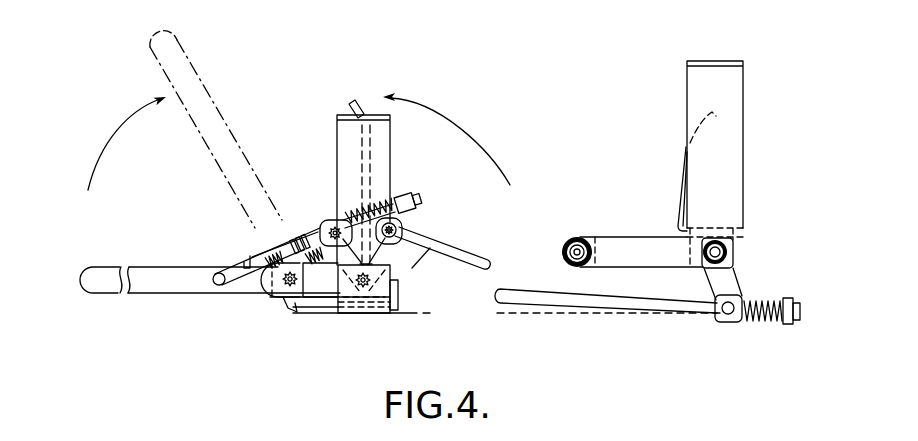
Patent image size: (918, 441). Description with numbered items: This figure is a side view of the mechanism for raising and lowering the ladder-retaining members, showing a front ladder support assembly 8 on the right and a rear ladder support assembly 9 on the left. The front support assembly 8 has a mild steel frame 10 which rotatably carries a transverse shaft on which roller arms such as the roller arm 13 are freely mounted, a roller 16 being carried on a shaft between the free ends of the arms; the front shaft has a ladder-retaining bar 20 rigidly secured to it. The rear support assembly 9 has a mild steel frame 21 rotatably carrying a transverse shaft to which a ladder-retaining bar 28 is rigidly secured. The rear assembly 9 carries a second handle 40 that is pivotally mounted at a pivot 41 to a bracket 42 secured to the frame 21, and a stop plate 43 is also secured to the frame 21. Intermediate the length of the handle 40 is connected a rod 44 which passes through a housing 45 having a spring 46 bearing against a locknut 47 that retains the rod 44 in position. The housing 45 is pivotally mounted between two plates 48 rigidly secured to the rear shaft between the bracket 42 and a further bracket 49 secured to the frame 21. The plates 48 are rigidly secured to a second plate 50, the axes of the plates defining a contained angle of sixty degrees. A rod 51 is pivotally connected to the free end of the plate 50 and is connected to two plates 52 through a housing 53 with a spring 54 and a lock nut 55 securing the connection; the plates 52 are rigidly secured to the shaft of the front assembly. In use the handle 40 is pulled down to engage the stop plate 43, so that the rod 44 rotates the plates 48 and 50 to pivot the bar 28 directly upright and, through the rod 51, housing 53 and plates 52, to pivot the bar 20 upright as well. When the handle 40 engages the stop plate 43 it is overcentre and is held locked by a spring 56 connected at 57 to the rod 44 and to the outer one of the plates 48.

The front ladder support assembly 8 is at (615, 104).
The rear ladder support assembly 9 is at (246, 76).
The mild steel frame 10 is at (690, 80).
The roller arm 13 is at (627, 247).
The roller 16 is at (558, 242).
The ladder-retaining bar 20 is at (677, 178).
The mild steel frame 21 is at (390, 133).
The ladder-retaining bar 28 is at (357, 107).
The second handle 40 is at (170, 72).
The pivot 41 is at (247, 283).
The bracket 42 is at (310, 292).
The stop plate 43 is at (270, 310).
The rod 44 is at (265, 258).
The housing 45 is at (320, 222).
The spring 46 is at (380, 198).
The locknut 47 is at (398, 197).
The plates 48 is at (325, 222).
The further bracket 49 is at (343, 290).
The second plate 50 is at (403, 222).
The rod 51 is at (493, 296).
The plates 52 is at (723, 280).
The housing 53 is at (713, 323).
The spring 54 is at (772, 300).
The lock nut 55 is at (793, 322).
The spring 56 is at (270, 247).
The connection point 57 is at (237, 268).